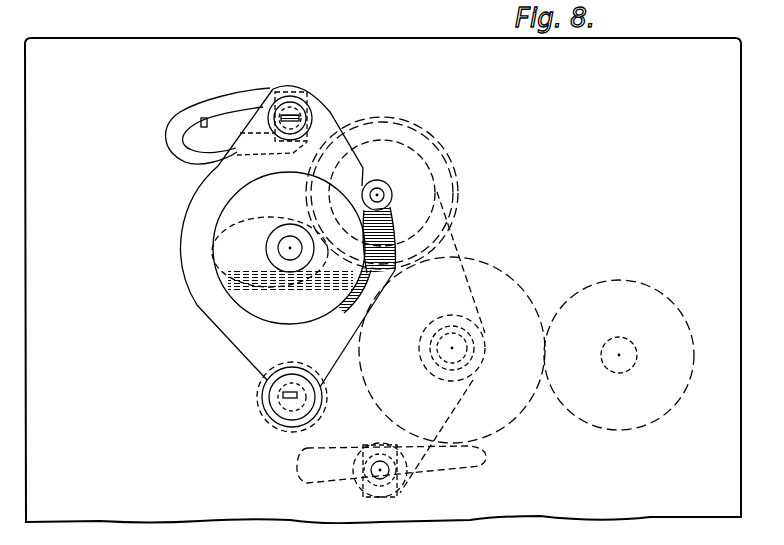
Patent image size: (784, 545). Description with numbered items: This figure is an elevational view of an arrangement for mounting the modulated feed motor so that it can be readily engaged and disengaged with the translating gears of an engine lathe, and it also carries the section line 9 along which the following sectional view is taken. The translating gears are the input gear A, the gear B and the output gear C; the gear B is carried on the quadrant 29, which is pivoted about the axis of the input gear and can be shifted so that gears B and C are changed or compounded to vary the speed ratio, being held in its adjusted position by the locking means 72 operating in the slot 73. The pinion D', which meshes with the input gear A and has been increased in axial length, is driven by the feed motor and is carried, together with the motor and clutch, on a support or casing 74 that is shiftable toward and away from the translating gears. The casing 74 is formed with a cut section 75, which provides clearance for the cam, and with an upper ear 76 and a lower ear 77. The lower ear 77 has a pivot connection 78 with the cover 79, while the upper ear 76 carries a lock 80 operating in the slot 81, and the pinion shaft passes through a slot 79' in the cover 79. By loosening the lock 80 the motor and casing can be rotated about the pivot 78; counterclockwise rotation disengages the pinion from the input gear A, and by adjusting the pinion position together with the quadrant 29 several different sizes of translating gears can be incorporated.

The section line 9 is at (262, 21).
The quadrant 29 is at (472, 413).
The locking means 72 is at (396, 484).
The slot 73 is at (480, 465).
The support or casing 74 is at (227, 203).
The cut section 75 is at (383, 180).
The upper ear 76 is at (338, 126).
The lower ear 77 is at (232, 345).
The pivot connection 78 is at (275, 393).
The cover 79 is at (383, 280).
The slot 79' is at (237, 252).
The lock 80 is at (303, 104).
The slot 81 is at (204, 118).
The input gear A is at (452, 159).
The translating gear B is at (473, 258).
The output gear C is at (627, 280).
The pinion D' is at (254, 275).